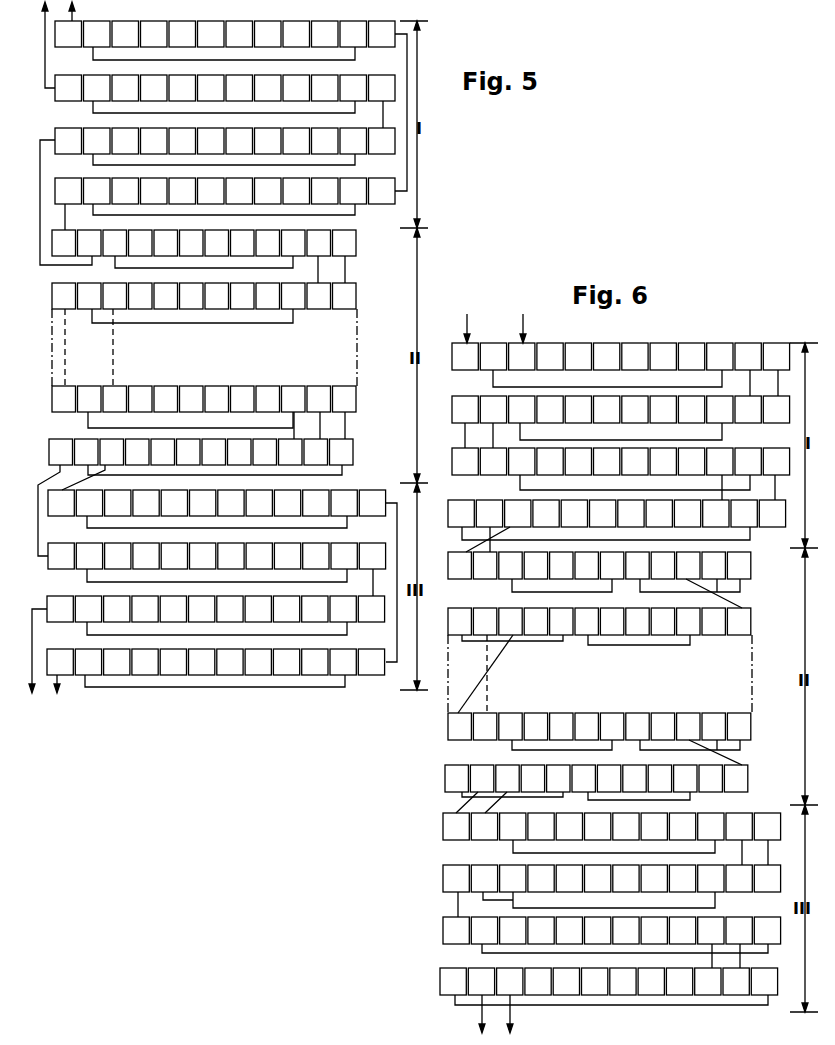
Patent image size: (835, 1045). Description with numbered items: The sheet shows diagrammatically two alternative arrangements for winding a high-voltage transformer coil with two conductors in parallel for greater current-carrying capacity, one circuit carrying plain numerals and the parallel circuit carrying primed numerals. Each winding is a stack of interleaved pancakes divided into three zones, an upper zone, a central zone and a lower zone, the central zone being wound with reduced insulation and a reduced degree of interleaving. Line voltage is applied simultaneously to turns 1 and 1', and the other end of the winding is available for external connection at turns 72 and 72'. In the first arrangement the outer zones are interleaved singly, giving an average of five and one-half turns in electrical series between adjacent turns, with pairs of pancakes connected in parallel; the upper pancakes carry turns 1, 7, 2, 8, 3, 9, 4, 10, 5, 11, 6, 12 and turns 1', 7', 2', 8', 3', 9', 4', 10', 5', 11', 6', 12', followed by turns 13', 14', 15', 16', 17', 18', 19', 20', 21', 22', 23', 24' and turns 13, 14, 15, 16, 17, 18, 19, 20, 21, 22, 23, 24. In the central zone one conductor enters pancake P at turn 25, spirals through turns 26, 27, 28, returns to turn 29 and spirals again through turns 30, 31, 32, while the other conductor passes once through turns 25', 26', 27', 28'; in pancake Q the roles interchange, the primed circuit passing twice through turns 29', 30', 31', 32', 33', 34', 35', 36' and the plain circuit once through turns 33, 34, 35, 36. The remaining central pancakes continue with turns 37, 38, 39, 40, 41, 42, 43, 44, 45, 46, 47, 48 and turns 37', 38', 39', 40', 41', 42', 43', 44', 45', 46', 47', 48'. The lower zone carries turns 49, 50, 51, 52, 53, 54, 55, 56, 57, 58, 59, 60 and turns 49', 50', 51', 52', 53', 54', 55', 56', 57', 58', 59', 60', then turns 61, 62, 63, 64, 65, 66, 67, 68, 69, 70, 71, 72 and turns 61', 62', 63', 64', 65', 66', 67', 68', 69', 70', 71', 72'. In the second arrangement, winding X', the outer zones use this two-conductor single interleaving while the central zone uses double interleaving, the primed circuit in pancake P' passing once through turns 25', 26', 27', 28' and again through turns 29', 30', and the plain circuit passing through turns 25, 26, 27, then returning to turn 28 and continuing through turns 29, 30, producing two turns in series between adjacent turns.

In FIG. 5, the turn 1 is at (68, 34).
In FIG. 6, the turn 1 is at (465, 356).
In FIG. 5, the element 2 is at (125, 34).
In FIG. 6, the element 2 is at (550, 356).
In FIG. 5, the element 3 is at (182, 34).
In FIG. 6, the element 3 is at (635, 356).
In FIG. 5, the element 4 is at (239, 34).
In FIG. 6, the element 4 is at (720, 356).
In FIG. 5, the element 5 is at (296, 34).
In FIG. 6, the element 5 is at (493, 356).
In FIG. 5, the element 6 is at (353, 34).
In FIG. 6, the element 6 is at (578, 356).
In FIG. 5, the element 7 is at (97, 34).
In FIG. 6, the element 7 is at (663, 356).
In FIG. 5, the element 8 is at (154, 34).
In FIG. 6, the element 8 is at (748, 356).
In FIG. 5, the element 9 is at (211, 34).
In FIG. 6, the element 9 is at (748, 409).
In FIG. 5, the element 10 is at (268, 34).
In FIG. 6, the element 10 is at (663, 409).
In FIG. 5, the element 11 is at (325, 34).
In FIG. 6, the element 11 is at (578, 409).
In FIG. 5, the element 12 is at (382, 34).
In FIG. 6, the element 12 is at (493, 409).
In FIG. 5, the element 13 is at (382, 191).
In FIG. 6, the element 13 is at (493, 461).
In FIG. 5, the element 14 is at (325, 191).
In FIG. 6, the element 14 is at (578, 461).
In FIG. 5, the element 15 is at (268, 191).
In FIG. 6, the element 15 is at (663, 461).
In FIG. 5, the element 16 is at (211, 191).
In FIG. 6, the element 16 is at (748, 461).
In FIG. 5, the element 17 is at (154, 191).
In FIG. 6, the element 17 is at (522, 461).
In FIG. 5, the element 18 is at (97, 191).
In FIG. 6, the element 18 is at (607, 461).
In FIG. 5, the element 19 is at (353, 191).
In FIG. 6, the element 19 is at (691, 461).
In FIG. 5, the element 20 is at (296, 191).
In FIG. 6, the element 20 is at (776, 461).
In FIG. 5, the element 21 is at (239, 191).
In FIG. 6, the element 21 is at (772, 513).
In FIG. 5, the element 22 is at (182, 191).
In FIG. 6, the element 22 is at (687, 513).
In FIG. 5, the element 23 is at (125, 191).
In FIG. 6, the element 23 is at (603, 513).
In FIG. 5, the element 24 is at (68, 191).
In FIG. 6, the element 24 is at (518, 513).
In FIG. 5, the turn 25 is at (64, 243).
In FIG. 6, the turn 25 is at (459, 565).
In FIG. 5, the turn 26 is at (141, 243).
In FIG. 6, the turn 26 is at (535, 565).
In FIG. 5, the turn 27 is at (217, 243).
In FIG. 6, the turn 27 is at (611, 565).
In FIG. 5, the turn 28 is at (294, 243).
In FIG. 6, the turn 28 is at (510, 565).
In FIG. 5, the turn 29 is at (115, 243).
In FIG. 6, the turn 29 is at (586, 565).
In FIG. 5, the turn 30 is at (192, 243).
In FIG. 6, the turn 30 is at (688, 565).
In FIG. 5, the turn 31 is at (268, 243).
In FIG. 6, the turn 31 is at (738, 621).
In FIG. 5, the turn 32 is at (345, 243).
In FIG. 6, the turn 32 is at (662, 621).
In FIG. 5, the turn 33 is at (345, 296).
In FIG. 6, the turn 33 is at (586, 621).
In FIG. 5, the turn 34 is at (268, 296).
In FIG. 6, the turn 34 is at (688, 621).
In FIG. 5, the turn 35 is at (192, 296).
In FIG. 6, the turn 35 is at (611, 621).
In FIG. 5, the turn 36 is at (115, 296).
In FIG. 6, the turn 36 is at (510, 621).
In FIG. 5, the element 37 is at (115, 399).
In FIG. 6, the element 37 is at (459, 726).
In FIG. 5, the element 38 is at (192, 399).
In FIG. 6, the element 38 is at (535, 726).
In FIG. 5, the element 39 is at (268, 399).
In FIG. 6, the element 39 is at (611, 726).
In FIG. 5, the element 40 is at (345, 399).
In FIG. 6, the element 40 is at (510, 726).
In FIG. 5, the element 41 is at (90, 399).
In FIG. 6, the element 41 is at (586, 726).
In FIG. 5, the element 42 is at (166, 399).
In FIG. 6, the element 42 is at (688, 726).
In FIG. 5, the element 43 is at (243, 399).
In FIG. 6, the element 43 is at (735, 778).
In FIG. 5, the element 44 is at (61, 452).
In FIG. 6, the element 44 is at (659, 778).
In FIG. 5, the element 45 is at (316, 452).
In FIG. 6, the element 45 is at (583, 778).
In FIG. 5, the element 46 is at (240, 452).
In FIG. 6, the element 46 is at (685, 778).
In FIG. 5, the element 47 is at (163, 452).
In FIG. 6, the element 47 is at (608, 778).
In FIG. 5, the element 48 is at (87, 452).
In FIG. 6, the element 48 is at (507, 778).
In FIG. 5, the element 49 is at (61, 556).
In FIG. 6, the element 49 is at (484, 826).
In FIG. 5, the element 50 is at (118, 556).
In FIG. 6, the element 50 is at (569, 826).
In FIG. 5, the element 51 is at (174, 556).
In FIG. 6, the element 51 is at (654, 826).
In FIG. 5, the element 52 is at (231, 556).
In FIG. 6, the element 52 is at (739, 826).
In FIG. 5, the element 53 is at (287, 556).
In FIG. 6, the element 53 is at (739, 878).
In FIG. 5, the element 54 is at (344, 556).
In FIG. 6, the element 54 is at (654, 878).
In FIG. 5, the element 55 is at (89, 556).
In FIG. 6, the element 55 is at (569, 878).
In FIG. 5, the element 56 is at (146, 556).
In FIG. 6, the element 56 is at (484, 878).
In FIG. 5, the element 57 is at (203, 556).
In FIG. 6, the element 57 is at (711, 878).
In FIG. 5, the element 58 is at (259, 556).
In FIG. 6, the element 58 is at (626, 878).
In FIG. 5, the element 59 is at (316, 556).
In FIG. 6, the element 59 is at (541, 878).
In FIG. 5, the element 60 is at (372, 556).
In FIG. 6, the element 60 is at (456, 878).
In FIG. 5, the element 61 is at (371, 609).
In FIG. 6, the element 61 is at (456, 930).
In FIG. 5, the element 62 is at (315, 609).
In FIG. 6, the element 62 is at (541, 930).
In FIG. 5, the element 63 is at (258, 609).
In FIG. 6, the element 63 is at (626, 930).
In FIG. 5, the element 64 is at (202, 609).
In FIG. 6, the element 64 is at (711, 930).
In FIG. 5, the element 65 is at (145, 609).
In FIG. 6, the element 65 is at (708, 981).
In FIG. 5, the element 66 is at (88, 609).
In FIG. 6, the element 66 is at (623, 981).
In FIG. 5, the element 67 is at (343, 609).
In FIG. 6, the element 67 is at (538, 981).
In FIG. 5, the element 68 is at (286, 609).
In FIG. 6, the element 68 is at (453, 981).
In FIG. 5, the element 69 is at (230, 609).
In FIG. 6, the element 69 is at (764, 981).
In FIG. 5, the element 70 is at (173, 609).
In FIG. 6, the element 70 is at (679, 981).
In FIG. 5, the element 71 is at (117, 609).
In FIG. 6, the element 71 is at (595, 981).
In FIG. 5, the turn 72 is at (60, 609).
In FIG. 6, the turn 72 is at (510, 981).
In FIG. 5, the turn 1' is at (68, 88).
In FIG. 6, the turn 1' is at (522, 356).
In FIG. 5, the element 2' is at (125, 88).
In FIG. 6, the element 2' is at (607, 356).
In FIG. 5, the element 3' is at (182, 88).
In FIG. 6, the element 3' is at (691, 356).
In FIG. 5, the element 4' is at (239, 88).
In FIG. 6, the element 4' is at (776, 356).
In FIG. 5, the element 5' is at (296, 88).
In FIG. 6, the element 5' is at (776, 409).
In FIG. 5, the element 6' is at (353, 88).
In FIG. 6, the element 6' is at (691, 409).
In FIG. 5, the element 7' is at (97, 88).
In FIG. 6, the element 7' is at (607, 409).
In FIG. 5, the element 8' is at (154, 88).
In FIG. 6, the element 8' is at (522, 409).
In FIG. 5, the element 9' is at (211, 88).
In FIG. 6, the element 9' is at (720, 409).
In FIG. 5, the element 10' is at (269, 88).
In FIG. 6, the element 10' is at (635, 409).
In FIG. 5, the element 11' is at (326, 88).
In FIG. 6, the element 11' is at (550, 409).
In FIG. 5, the element 12' is at (383, 88).
In FIG. 6, the element 12' is at (465, 409).
In FIG. 5, the element 13' is at (383, 141).
In FIG. 6, the element 13' is at (465, 461).
In FIG. 5, the element 14' is at (326, 141).
In FIG. 6, the element 14' is at (550, 461).
In FIG. 5, the element 15' is at (269, 141).
In FIG. 6, the element 15' is at (635, 461).
In FIG. 5, the element 16' is at (212, 141).
In FIG. 6, the element 16' is at (720, 461).
In FIG. 5, the element 17' is at (155, 141).
In FIG. 6, the element 17' is at (716, 513).
In FIG. 5, the element 18' is at (98, 141).
In FIG. 6, the element 18' is at (631, 513).
In FIG. 5, the element 19' is at (353, 141).
In FIG. 6, the element 19' is at (546, 513).
In FIG. 5, the element 20' is at (296, 141).
In FIG. 6, the element 20' is at (461, 513).
In FIG. 5, the element 21' is at (239, 141).
In FIG. 6, the element 21' is at (744, 513).
In FIG. 5, the element 22' is at (182, 141).
In FIG. 6, the element 22' is at (659, 513).
In FIG. 5, the element 23' is at (125, 141).
In FIG. 6, the element 23' is at (574, 513).
In FIG. 5, the element 24' is at (68, 141).
In FIG. 6, the element 24' is at (489, 513).
In FIG. 5, the turn 25' is at (90, 243).
In FIG. 6, the turn 25' is at (485, 565).
In FIG. 5, the turn 26' is at (166, 243).
In FIG. 6, the turn 26' is at (562, 565).
In FIG. 5, the turn 27' is at (243, 243).
In FIG. 6, the turn 27' is at (663, 565).
In FIG. 5, the turn 28' is at (319, 243).
In FIG. 6, the turn 28' is at (739, 565).
In FIG. 5, the turn 29' is at (319, 296).
In FIG. 6, the turn 29' is at (638, 565).
In FIG. 5, the turn 30' is at (243, 296).
In FIG. 6, the turn 30' is at (714, 565).
In FIG. 5, the turn 31' is at (166, 296).
In FIG. 6, the turn 31' is at (714, 621).
In FIG. 5, the turn 32' is at (90, 296).
In FIG. 6, the turn 32' is at (638, 621).
In FIG. 5, the turn 33' is at (294, 296).
In FIG. 6, the turn 33' is at (536, 621).
In FIG. 5, the turn 34' is at (217, 296).
In FIG. 6, the turn 34' is at (460, 621).
In FIG. 5, the turn 35' is at (141, 296).
In FIG. 6, the turn 35' is at (562, 621).
In FIG. 5, the turn 36' is at (64, 296).
In FIG. 6, the turn 36' is at (485, 621).
In FIG. 5, the element 37' is at (64, 399).
In FIG. 6, the element 37' is at (485, 726).
In FIG. 5, the element 38' is at (141, 399).
In FIG. 6, the element 38' is at (562, 726).
In FIG. 5, the element 39' is at (217, 399).
In FIG. 6, the element 39' is at (663, 726).
In FIG. 5, the element 40' is at (294, 399).
In FIG. 6, the element 40' is at (739, 726).
In FIG. 5, the element 41' is at (291, 452).
In FIG. 6, the element 41' is at (638, 726).
In FIG. 5, the element 42' is at (214, 452).
In FIG. 6, the element 42' is at (714, 726).
In FIG. 5, the element 43' is at (138, 452).
In FIG. 6, the element 43' is at (711, 778).
In FIG. 5, the element 44' is at (319, 399).
In FIG. 6, the element 44' is at (635, 778).
In FIG. 5, the element 45' is at (342, 452).
In FIG. 6, the element 45' is at (533, 778).
In FIG. 5, the element 46' is at (265, 452).
In FIG. 6, the element 46' is at (457, 778).
In FIG. 5, the element 47' is at (189, 452).
In FIG. 6, the element 47' is at (559, 778).
In FIG. 5, the element 48' is at (112, 452).
In FIG. 6, the element 48' is at (482, 778).
In FIG. 5, the element 49' is at (61, 503).
In FIG. 6, the element 49' is at (456, 826).
In FIG. 5, the element 50' is at (119, 503).
In FIG. 6, the element 50' is at (541, 826).
In FIG. 5, the element 51' is at (174, 503).
In FIG. 6, the element 51' is at (626, 826).
In FIG. 5, the element 52' is at (231, 503).
In FIG. 6, the element 52' is at (711, 826).
In FIG. 5, the element 53' is at (288, 503).
In FIG. 6, the element 53' is at (514, 826).
In FIG. 5, the element 54' is at (344, 503).
In FIG. 6, the element 54' is at (599, 826).
In FIG. 5, the element 55' is at (89, 503).
In FIG. 6, the element 55' is at (683, 826).
In FIG. 5, the element 56' is at (146, 503).
In FIG. 6, the element 56' is at (767, 826).
In FIG. 5, the element 57' is at (204, 503).
In FIG. 6, the element 57' is at (767, 878).
In FIG. 5, the element 58' is at (259, 503).
In FIG. 6, the element 58' is at (683, 878).
In FIG. 5, the element 59' is at (316, 503).
In FIG. 6, the element 59' is at (599, 878).
In FIG. 5, the element 60' is at (372, 503).
In FIG. 6, the element 60' is at (514, 878).
In FIG. 5, the element 61' is at (371, 662).
In FIG. 6, the element 61' is at (514, 930).
In FIG. 5, the element 62' is at (315, 662).
In FIG. 6, the element 62' is at (599, 930).
In FIG. 5, the element 63' is at (258, 662).
In FIG. 6, the element 63' is at (683, 930).
In FIG. 5, the element 64' is at (203, 662).
In FIG. 6, the element 64' is at (767, 930).
In FIG. 5, the element 65' is at (145, 662).
In FIG. 6, the element 65' is at (484, 930).
In FIG. 5, the element 66' is at (88, 662).
In FIG. 6, the element 66' is at (569, 930).
In FIG. 5, the element 67' is at (343, 662).
In FIG. 6, the element 67' is at (654, 930).
In FIG. 5, the element 68' is at (287, 662).
In FIG. 6, the element 68' is at (739, 930).
In FIG. 5, the element 69' is at (230, 662).
In FIG. 6, the element 69' is at (736, 981).
In FIG. 5, the element 70' is at (173, 662).
In FIG. 6, the element 70' is at (651, 981).
In FIG. 5, the element 71' is at (118, 662).
In FIG. 6, the element 71' is at (566, 981).
In FIG. 5, the turn 72' is at (60, 662).
In FIG. 6, the turn 72' is at (481, 981).